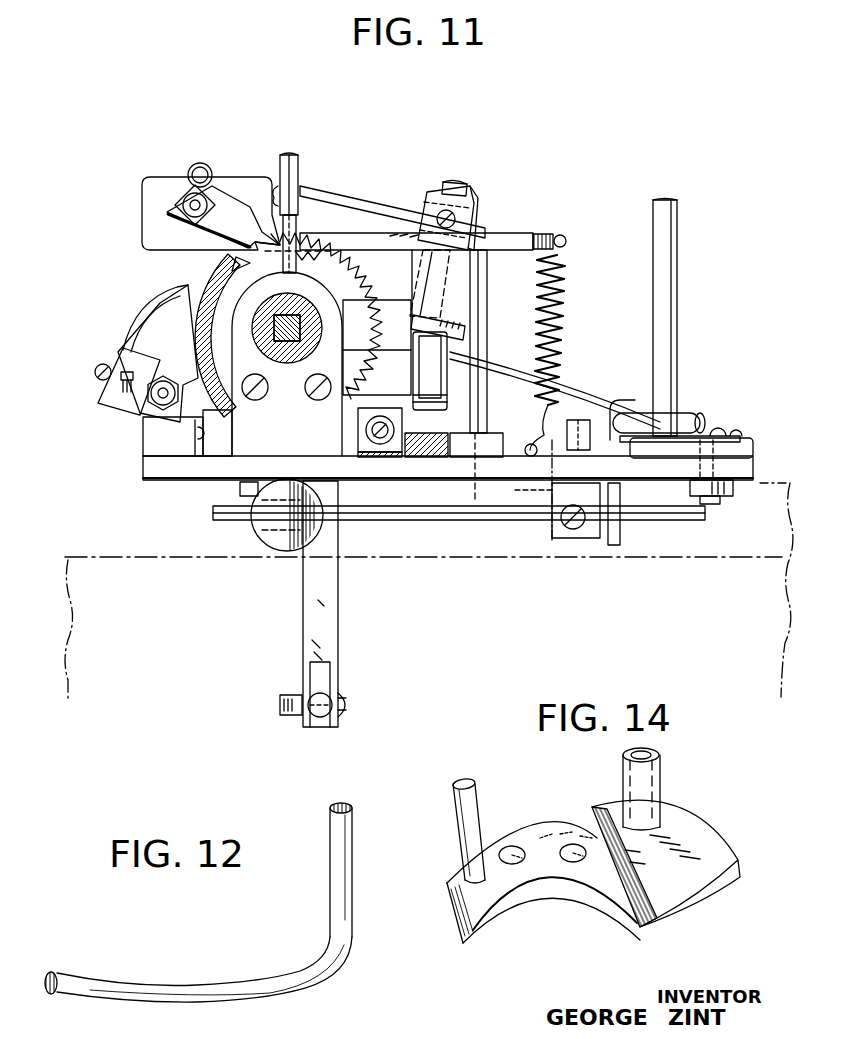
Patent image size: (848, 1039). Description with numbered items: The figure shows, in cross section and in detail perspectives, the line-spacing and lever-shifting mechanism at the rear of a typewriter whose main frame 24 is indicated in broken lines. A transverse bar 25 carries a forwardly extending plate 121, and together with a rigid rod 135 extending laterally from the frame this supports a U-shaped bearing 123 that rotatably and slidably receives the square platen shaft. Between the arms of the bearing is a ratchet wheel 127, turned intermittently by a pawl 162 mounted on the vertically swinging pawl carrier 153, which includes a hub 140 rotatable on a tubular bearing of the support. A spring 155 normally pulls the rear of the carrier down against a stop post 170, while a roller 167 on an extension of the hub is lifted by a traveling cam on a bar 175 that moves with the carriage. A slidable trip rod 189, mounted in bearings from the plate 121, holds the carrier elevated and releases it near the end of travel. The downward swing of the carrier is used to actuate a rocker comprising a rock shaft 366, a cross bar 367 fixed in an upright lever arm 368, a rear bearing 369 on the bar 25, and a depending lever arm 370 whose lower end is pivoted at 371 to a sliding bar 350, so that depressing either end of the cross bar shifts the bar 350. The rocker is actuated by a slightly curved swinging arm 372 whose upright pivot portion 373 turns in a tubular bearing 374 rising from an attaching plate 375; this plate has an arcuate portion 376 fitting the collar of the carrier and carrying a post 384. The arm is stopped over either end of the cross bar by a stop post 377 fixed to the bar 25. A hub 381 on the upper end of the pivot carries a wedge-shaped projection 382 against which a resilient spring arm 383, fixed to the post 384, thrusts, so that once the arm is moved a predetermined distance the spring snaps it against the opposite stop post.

In FIG. 11, the main frame 24 is at (104, 565).
In FIG. 11, the transverse bar 25 is at (742, 452).
In FIG. 11, the plate 121 is at (237, 468).
In FIG. 11, the U-shaped bearing 123 is at (292, 448).
In FIG. 11, the ratchet wheel 127 is at (310, 264).
In FIG. 11, the rigid rod 135 is at (262, 528).
In FIG. 11, the hub 140 is at (403, 279).
In FIG. 11, the pawl carrier 153 is at (522, 242).
In FIG. 11, the spring 155 is at (557, 306).
In FIG. 11, the pawl 162 is at (222, 210).
In FIG. 11, the roller 167 is at (420, 398).
In FIG. 11, the stop post 170 is at (462, 350).
In FIG. 11, the bar 175 is at (436, 458).
In FIG. 11, the trip rod 189 is at (365, 428).
In FIG. 11, the sliding bar 350 is at (322, 713).
In FIG. 11, the rock shaft 366 is at (522, 512).
In FIG. 11, the cross bar 367 is at (578, 425).
In FIG. 11, the upright lever arm 368 is at (555, 493).
In FIG. 11, the bearing 369 is at (620, 533).
In FIG. 11, the depending lever arm 370 is at (305, 618).
In FIG. 11, the pivot 371 is at (343, 700).
In FIG. 11, the swinging arm 372 is at (549, 402).
In FIG. 12, the swinging arm 372 is at (135, 988).
In FIG. 11, the upright pivot portion 373 is at (455, 182).
In FIG. 12, the upright pivot portion 373 is at (336, 902).
In FIG. 11, the tubular bearing 374 is at (440, 280).
In FIG. 14, the tubular bearing 374 is at (635, 778).
In FIG. 11, the attaching plate 375 is at (462, 328).
In FIG. 14, the attaching plate 375 is at (758, 773).
In FIG. 14, the arcuate portion 376 is at (582, 877).
In FIG. 11, the stop post 377 is at (677, 252).
In FIG. 11, the hub 381 is at (478, 206).
In FIG. 11, the wedge-shaped projection 382 is at (438, 200).
In FIG. 11, the spring arm 383 is at (366, 200).
In FIG. 11, the post 384 is at (301, 163).
In FIG. 14, the post 384 is at (472, 830).